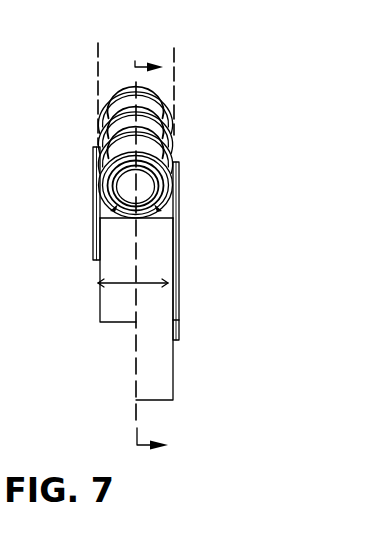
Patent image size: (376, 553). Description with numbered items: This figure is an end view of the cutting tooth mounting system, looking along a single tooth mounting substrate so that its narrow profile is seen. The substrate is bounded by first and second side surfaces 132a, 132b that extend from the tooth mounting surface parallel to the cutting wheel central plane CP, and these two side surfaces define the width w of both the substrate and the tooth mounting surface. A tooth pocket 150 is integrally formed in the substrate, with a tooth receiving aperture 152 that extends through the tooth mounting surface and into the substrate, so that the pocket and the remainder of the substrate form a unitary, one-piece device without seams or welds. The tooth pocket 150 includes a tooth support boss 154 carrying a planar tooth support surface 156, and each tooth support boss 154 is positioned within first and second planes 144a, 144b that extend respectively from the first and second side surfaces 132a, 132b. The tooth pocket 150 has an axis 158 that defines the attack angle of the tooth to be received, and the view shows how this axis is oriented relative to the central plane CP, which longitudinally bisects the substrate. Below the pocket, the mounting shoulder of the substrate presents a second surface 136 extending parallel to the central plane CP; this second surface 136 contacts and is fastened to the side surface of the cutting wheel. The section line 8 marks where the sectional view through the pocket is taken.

The section line 8- 8 is at (142, 245).
The first side surface 132a is at (177, 262).
The second side surface 132b is at (97, 257).
The second surface 136 is at (137, 358).
The first plane 144a is at (175, 50).
The second plane 144b is at (98, 43).
The tooth pocket 150 is at (78, 138).
The tooth receiving aperture 152 is at (125, 190).
The tooth support boss 154 is at (102, 189).
The planar tooth support surface 156 is at (113, 209).
The tooth pocket axis 158 is at (96, 126).
The width w is at (123, 288).
The cutting wheel central plane CP is at (133, 320).